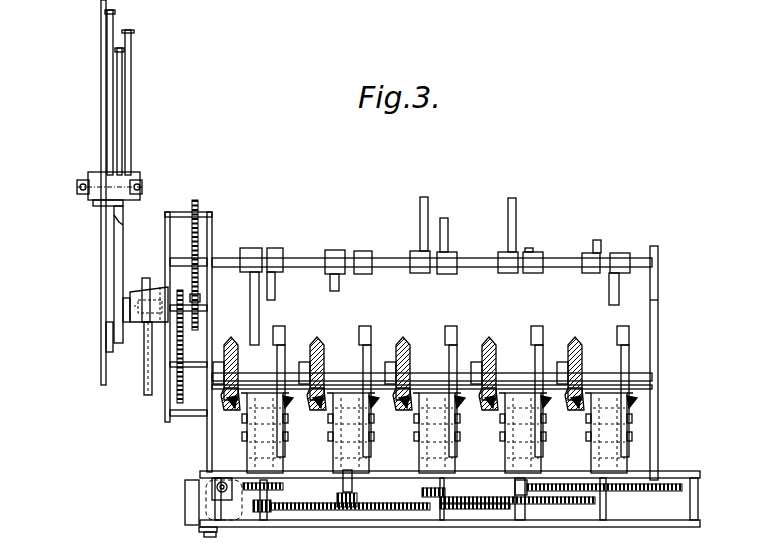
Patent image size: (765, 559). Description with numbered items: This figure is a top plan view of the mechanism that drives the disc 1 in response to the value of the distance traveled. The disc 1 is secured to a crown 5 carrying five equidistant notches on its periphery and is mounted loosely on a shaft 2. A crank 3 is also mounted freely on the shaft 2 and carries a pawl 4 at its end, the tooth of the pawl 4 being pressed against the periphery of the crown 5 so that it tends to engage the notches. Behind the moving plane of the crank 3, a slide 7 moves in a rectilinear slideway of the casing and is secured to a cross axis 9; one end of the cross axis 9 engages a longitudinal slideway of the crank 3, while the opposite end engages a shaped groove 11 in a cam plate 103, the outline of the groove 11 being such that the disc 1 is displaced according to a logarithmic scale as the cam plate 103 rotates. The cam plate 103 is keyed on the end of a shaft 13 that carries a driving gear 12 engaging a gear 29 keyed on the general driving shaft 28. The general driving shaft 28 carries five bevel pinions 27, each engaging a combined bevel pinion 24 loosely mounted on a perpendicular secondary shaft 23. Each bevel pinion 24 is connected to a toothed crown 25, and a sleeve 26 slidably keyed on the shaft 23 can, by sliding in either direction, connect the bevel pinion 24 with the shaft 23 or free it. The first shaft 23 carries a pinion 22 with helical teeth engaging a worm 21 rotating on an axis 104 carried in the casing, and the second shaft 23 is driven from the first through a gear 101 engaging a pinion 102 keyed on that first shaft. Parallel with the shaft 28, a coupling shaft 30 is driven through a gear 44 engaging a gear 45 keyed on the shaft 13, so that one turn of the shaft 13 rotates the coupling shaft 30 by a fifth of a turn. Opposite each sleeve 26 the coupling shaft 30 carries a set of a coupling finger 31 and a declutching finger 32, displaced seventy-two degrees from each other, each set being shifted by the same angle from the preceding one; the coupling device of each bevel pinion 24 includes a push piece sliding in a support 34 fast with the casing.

The disc 1 is at (102, 52).
The shaft 2 is at (84, 197).
The crank 3 is at (124, 232).
The pawl 4 is at (112, 348).
The crown 5 is at (111, 23).
The slide 7 is at (142, 292).
The cross axis 9 is at (128, 305).
The groove 11 is at (146, 378).
The driving gear 12 is at (163, 288).
The shaft 13 is at (186, 316).
The worm 21 is at (242, 464).
The pinion 22 is at (251, 488).
The secondary shaft 23 is at (268, 481).
The combined bevel pinion 24 is at (286, 403).
The crown 25 is at (284, 427).
The sleeve 26 is at (284, 443).
The bevel pinion 27 is at (230, 340).
The general driving shaft 28 is at (651, 380).
The gear 29 is at (182, 418).
The coupling shaft 30 is at (389, 257).
The finger 31 is at (282, 248).
The finger 32 is at (252, 248).
The support 34 is at (652, 397).
The gear 44 is at (198, 248).
The gear 45 is at (200, 300).
The gear 101 is at (320, 508).
The pinion 102 is at (268, 512).
The cam plate 103 is at (149, 397).
The axis 104 is at (216, 489).